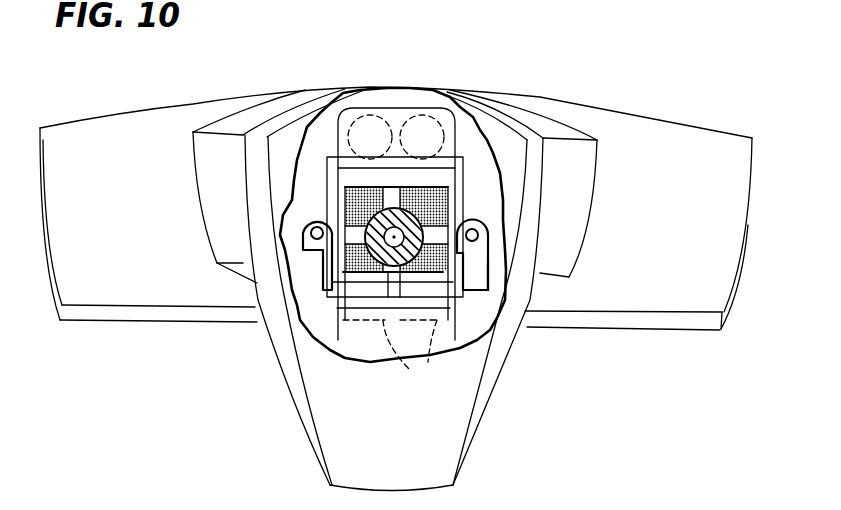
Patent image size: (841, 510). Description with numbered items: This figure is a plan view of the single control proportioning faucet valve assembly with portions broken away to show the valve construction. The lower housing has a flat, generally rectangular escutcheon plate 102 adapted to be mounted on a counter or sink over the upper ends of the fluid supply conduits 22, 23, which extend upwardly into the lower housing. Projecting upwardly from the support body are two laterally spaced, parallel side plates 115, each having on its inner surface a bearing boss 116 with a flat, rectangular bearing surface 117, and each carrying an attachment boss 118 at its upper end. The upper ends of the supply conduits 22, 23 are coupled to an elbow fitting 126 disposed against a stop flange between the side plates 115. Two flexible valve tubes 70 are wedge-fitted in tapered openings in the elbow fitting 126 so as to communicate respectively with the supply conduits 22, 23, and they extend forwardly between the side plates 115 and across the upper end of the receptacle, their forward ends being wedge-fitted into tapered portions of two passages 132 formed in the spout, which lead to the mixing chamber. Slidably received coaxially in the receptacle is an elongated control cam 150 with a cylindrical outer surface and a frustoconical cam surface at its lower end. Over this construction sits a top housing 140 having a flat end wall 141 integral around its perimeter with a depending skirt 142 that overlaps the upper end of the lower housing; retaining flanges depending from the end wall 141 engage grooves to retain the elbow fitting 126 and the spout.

The escutcheon plate 102 is at (707, 137).
The top housing 140 is at (278, 377).
The end wall 141 is at (373, 390).
The skirt 142 is at (490, 401).
The fluid supply conduit 22 is at (360, 114).
The fluid supply conduit 23 is at (448, 91).
The elbow fitting 126 is at (398, 113).
The flexible valve tube 70 is at (438, 196).
The side plate 115 is at (447, 212).
The bearing boss 116 is at (482, 229).
The bearing surface 117 is at (356, 225).
The attachment boss 118 is at (492, 260).
The control cam 150 is at (425, 257).
The passage 132 is at (403, 357).